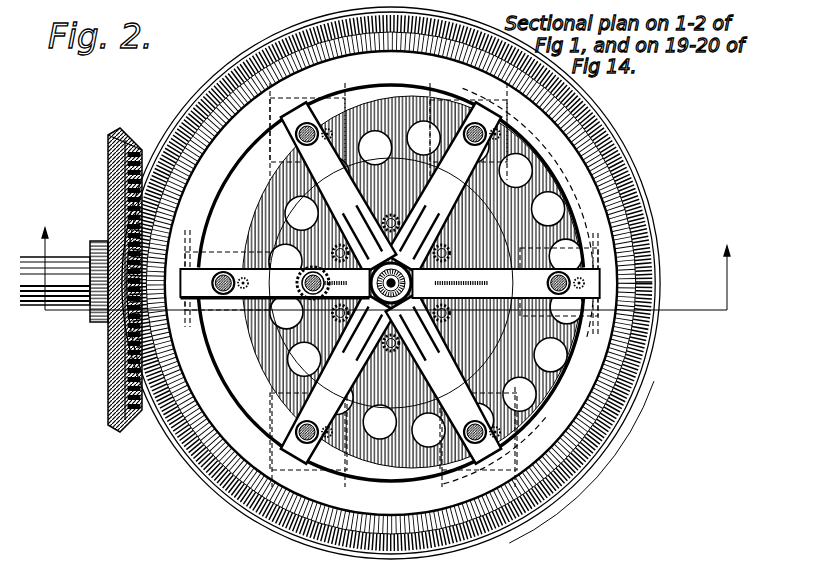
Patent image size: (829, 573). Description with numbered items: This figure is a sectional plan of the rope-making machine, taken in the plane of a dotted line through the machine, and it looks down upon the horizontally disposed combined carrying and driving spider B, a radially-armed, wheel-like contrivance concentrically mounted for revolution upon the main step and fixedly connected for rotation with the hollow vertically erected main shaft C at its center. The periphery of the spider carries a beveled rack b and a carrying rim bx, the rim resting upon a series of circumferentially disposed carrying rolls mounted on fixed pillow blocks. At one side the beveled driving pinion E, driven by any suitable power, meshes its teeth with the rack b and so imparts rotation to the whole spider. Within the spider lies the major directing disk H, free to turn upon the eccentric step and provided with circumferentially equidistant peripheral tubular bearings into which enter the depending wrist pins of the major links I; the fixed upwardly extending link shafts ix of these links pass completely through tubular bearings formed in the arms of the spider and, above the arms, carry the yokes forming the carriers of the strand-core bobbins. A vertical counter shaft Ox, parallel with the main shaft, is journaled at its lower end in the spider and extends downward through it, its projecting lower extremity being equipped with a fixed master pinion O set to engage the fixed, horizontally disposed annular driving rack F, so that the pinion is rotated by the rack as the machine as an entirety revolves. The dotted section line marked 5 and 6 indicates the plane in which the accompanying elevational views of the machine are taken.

The combined carrying and driving spider B is at (610, 478).
The major directing disk H is at (392, 98).
The peripheral beveled rack b is at (603, 150).
The peripheral carrying rim bx is at (391, 285).
The beveled driving pinion E is at (301, 282).
The link shaft ix is at (472, 123).
The major link I is at (502, 132).
The annular driving rack F is at (391, 283).
The main shaft C is at (398, 278).
The master pinion O is at (295, 283).
The counter shaft Ox is at (391, 283).
The section line 5-6 5 is at (380, 281).
The section line 5- 6 is at (733, 284).